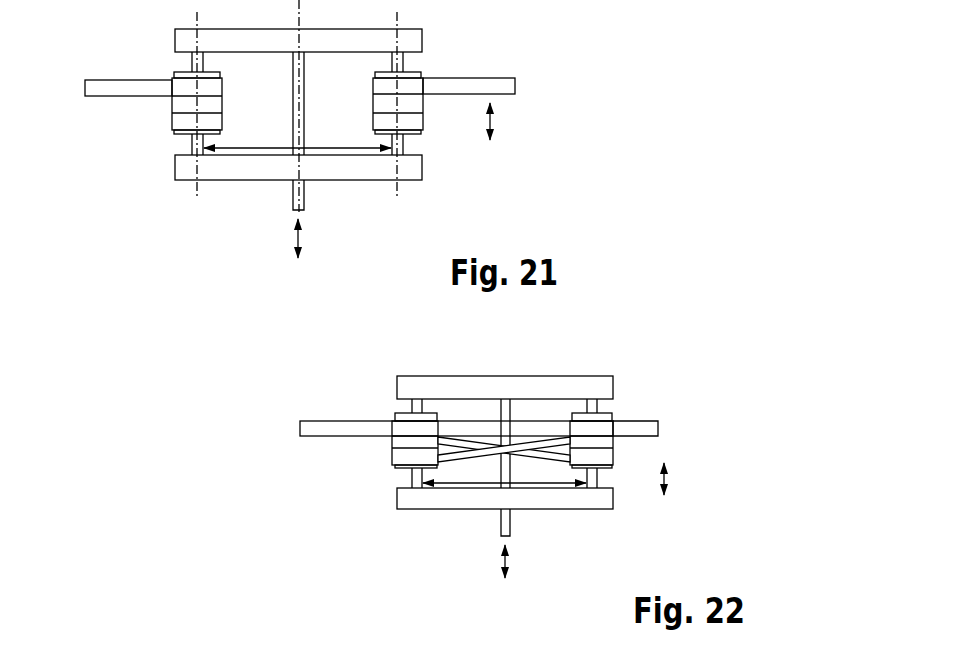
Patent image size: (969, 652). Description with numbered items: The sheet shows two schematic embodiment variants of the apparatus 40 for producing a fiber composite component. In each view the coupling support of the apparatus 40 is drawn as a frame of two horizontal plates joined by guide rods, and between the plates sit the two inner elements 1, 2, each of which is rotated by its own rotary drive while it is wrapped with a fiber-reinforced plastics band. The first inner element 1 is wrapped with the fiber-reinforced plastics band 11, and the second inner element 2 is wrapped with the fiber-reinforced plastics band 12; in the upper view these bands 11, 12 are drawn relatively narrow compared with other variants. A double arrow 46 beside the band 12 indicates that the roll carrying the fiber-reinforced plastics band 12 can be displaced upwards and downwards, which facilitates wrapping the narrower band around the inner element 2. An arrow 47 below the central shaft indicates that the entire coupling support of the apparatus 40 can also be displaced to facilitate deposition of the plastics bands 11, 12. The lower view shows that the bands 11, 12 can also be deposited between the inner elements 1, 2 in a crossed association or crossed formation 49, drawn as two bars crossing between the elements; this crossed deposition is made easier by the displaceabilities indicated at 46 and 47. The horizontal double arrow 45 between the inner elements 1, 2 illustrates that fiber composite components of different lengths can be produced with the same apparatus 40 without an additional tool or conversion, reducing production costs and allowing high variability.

In FIG. 21, the inner element 1 is at (167, 137).
In FIG. 22, the inner element 1 is at (393, 473).
In FIG. 21, the inner element 2 is at (423, 132).
In FIG. 22, the inner element 2 is at (603, 473).
In FIG. 21, the fiber-reinforced plastics band 11 is at (105, 80).
In FIG. 22, the fiber-reinforced plastics band 11 is at (312, 437).
In FIG. 21, the fiber-reinforced plastics band 12 is at (465, 76).
In FIG. 22, the fiber-reinforced plastics band 12 is at (653, 420).
In FIG. 21, the apparatus 40 is at (217, 188).
In FIG. 21, the double arrow 45 is at (279, 148).
In FIG. 22, the double arrow 45 is at (448, 486).
In FIG. 21, the double arrow 46 is at (492, 120).
In FIG. 22, the double arrow 46 is at (666, 480).
In FIG. 21, the arrow 47 is at (300, 238).
In FIG. 22, the arrow 47 is at (507, 562).
In FIG. 22, the crossed formation 49 is at (538, 463).